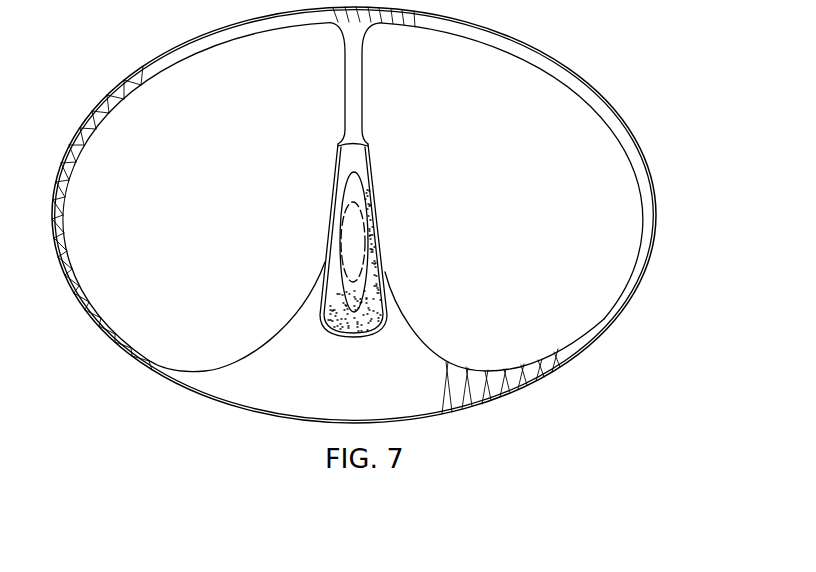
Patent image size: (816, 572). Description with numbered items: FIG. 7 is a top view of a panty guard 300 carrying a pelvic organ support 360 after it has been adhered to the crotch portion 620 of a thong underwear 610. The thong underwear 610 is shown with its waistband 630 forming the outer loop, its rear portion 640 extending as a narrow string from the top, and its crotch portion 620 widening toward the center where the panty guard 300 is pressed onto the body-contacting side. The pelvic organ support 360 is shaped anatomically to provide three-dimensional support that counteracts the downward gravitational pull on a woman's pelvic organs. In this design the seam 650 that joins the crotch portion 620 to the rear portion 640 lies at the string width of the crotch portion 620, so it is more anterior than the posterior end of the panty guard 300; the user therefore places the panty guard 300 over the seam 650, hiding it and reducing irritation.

The thong underwear 610 is at (212, 399).
The crotch portion 620 is at (310, 340).
The waistband 630 is at (650, 168).
The rear portion 640 is at (363, 88).
The seam 650 is at (362, 146).
The panty guard 300 is at (364, 339).
The pelvic organ support 360 is at (358, 228).